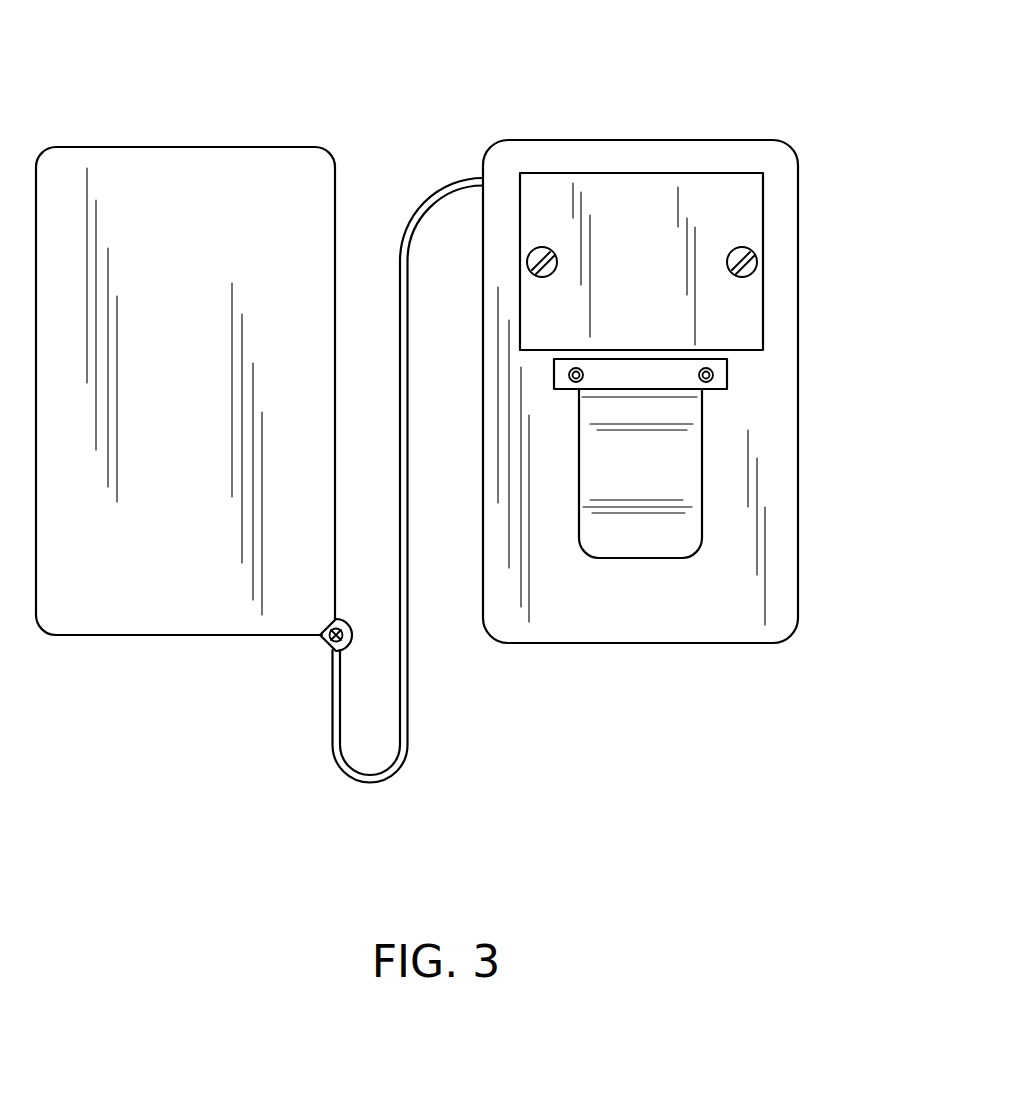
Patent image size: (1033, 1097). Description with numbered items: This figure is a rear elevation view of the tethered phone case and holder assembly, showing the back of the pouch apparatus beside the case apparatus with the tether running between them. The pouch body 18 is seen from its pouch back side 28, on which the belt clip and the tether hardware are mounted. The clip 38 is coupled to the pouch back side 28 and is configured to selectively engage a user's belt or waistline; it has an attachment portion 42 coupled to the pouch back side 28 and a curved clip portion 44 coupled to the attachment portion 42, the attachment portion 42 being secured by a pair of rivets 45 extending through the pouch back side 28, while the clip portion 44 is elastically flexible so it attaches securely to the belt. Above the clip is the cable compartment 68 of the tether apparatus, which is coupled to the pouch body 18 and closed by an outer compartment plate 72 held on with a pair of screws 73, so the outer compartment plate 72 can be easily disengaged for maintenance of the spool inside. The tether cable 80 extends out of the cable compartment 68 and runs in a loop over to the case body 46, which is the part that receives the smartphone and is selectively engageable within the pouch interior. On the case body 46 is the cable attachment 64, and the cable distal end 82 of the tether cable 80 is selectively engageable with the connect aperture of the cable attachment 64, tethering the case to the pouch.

The pouch body 18 is at (797, 598).
The pouch back side 28 is at (722, 595).
The clip 38 is at (705, 515).
The attachment portion 42 is at (653, 370).
The curved clip portion 44 is at (653, 467).
The pair of rivets 45 is at (580, 380).
The case body 46 is at (176, 595).
The cable attachment 64 is at (321, 638).
The cable compartment 68 is at (763, 205).
The outer compartment plate 72 is at (665, 198).
The pair of screws 73 is at (727, 262).
The tether cable 80 is at (368, 772).
The cable distal end 82 is at (345, 625).